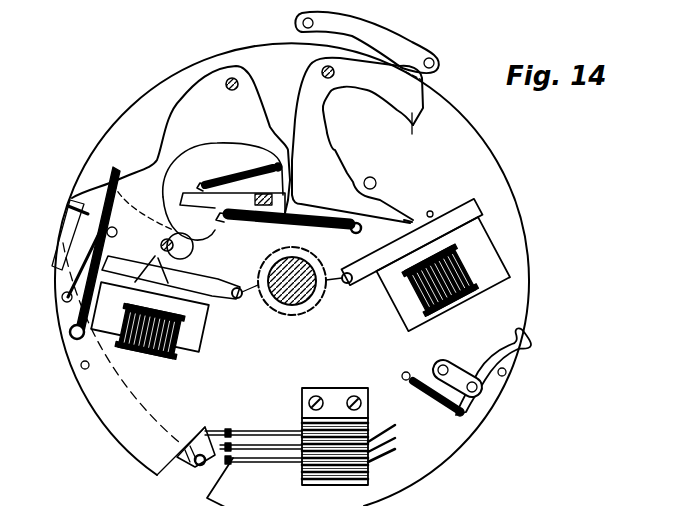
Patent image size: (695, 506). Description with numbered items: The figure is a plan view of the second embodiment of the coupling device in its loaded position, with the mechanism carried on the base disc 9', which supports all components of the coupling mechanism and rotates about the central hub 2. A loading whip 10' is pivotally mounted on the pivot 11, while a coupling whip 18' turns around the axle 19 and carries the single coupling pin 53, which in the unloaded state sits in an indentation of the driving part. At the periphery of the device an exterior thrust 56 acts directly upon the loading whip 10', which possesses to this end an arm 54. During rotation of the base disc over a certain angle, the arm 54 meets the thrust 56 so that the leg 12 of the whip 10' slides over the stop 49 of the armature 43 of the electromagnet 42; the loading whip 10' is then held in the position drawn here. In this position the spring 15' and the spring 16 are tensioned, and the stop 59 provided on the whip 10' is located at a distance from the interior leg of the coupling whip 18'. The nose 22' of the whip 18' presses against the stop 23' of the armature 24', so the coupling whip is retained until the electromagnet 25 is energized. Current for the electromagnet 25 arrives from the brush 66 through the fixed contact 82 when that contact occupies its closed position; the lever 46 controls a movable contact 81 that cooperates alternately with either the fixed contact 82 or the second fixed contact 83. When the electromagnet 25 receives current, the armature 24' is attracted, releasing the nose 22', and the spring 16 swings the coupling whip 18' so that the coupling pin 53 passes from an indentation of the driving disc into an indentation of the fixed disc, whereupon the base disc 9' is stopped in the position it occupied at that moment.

The shaft 2 is at (292, 310).
The base disc 9′ is at (527, 262).
The loading whip 10′ is at (322, 135).
The pivot 11 is at (322, 72).
The leg 12 is at (412, 218).
The spring 15′ is at (268, 232).
The spring 16 is at (240, 170).
The coupling whip 18′ is at (183, 113).
The axle 19 is at (238, 80).
The nose 22′ is at (171, 285).
The stop 23′ is at (142, 280).
The armature 24′ is at (192, 278).
The electromagnet 25 is at (198, 340).
The electromagnet 42 is at (392, 303).
The armature 43 is at (468, 210).
The lever 46 is at (63, 222).
The stop 49 is at (433, 213).
The coupling pin 53 is at (185, 246).
The arm 54 is at (420, 132).
The exterior thrust 56 is at (410, 45).
The stop 59 is at (285, 205).
The brush 66 is at (503, 352).
The movable contact 81 is at (203, 430).
The fixed contact 82 is at (234, 461).
The fixed contact 83 is at (247, 432).